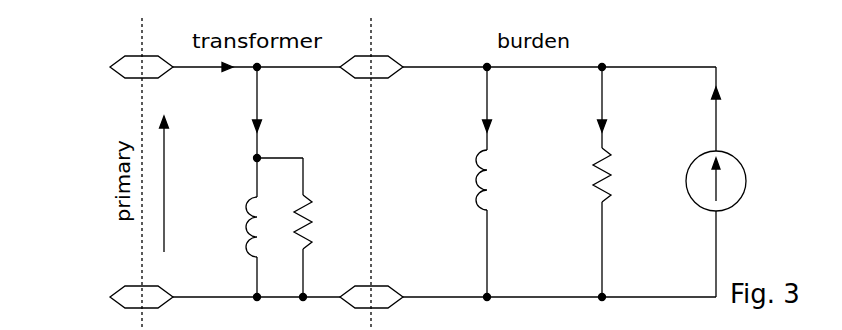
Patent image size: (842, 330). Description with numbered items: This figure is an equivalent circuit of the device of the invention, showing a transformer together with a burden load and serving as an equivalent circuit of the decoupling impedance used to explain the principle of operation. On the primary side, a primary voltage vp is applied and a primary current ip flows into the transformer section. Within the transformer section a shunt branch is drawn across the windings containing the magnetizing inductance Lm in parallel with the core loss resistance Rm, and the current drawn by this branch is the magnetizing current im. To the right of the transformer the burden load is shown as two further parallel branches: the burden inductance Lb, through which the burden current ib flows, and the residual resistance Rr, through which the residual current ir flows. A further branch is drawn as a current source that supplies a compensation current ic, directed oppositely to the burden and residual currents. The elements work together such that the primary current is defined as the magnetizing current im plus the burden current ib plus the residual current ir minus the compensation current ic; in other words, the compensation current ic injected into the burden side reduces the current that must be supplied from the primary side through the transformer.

The primary current ip is at (218, 85).
The primary voltage vp is at (179, 184).
The magnetizing current im is at (272, 112).
The magnetizing inductance Lm is at (240, 227).
The core loss resistance Rm is at (319, 227).
The burden current ib is at (500, 108).
The burden inductance Lb is at (469, 223).
The residual current ir is at (613, 107).
The residual resistance Rr is at (589, 222).
The compensation current ic is at (716, 182).